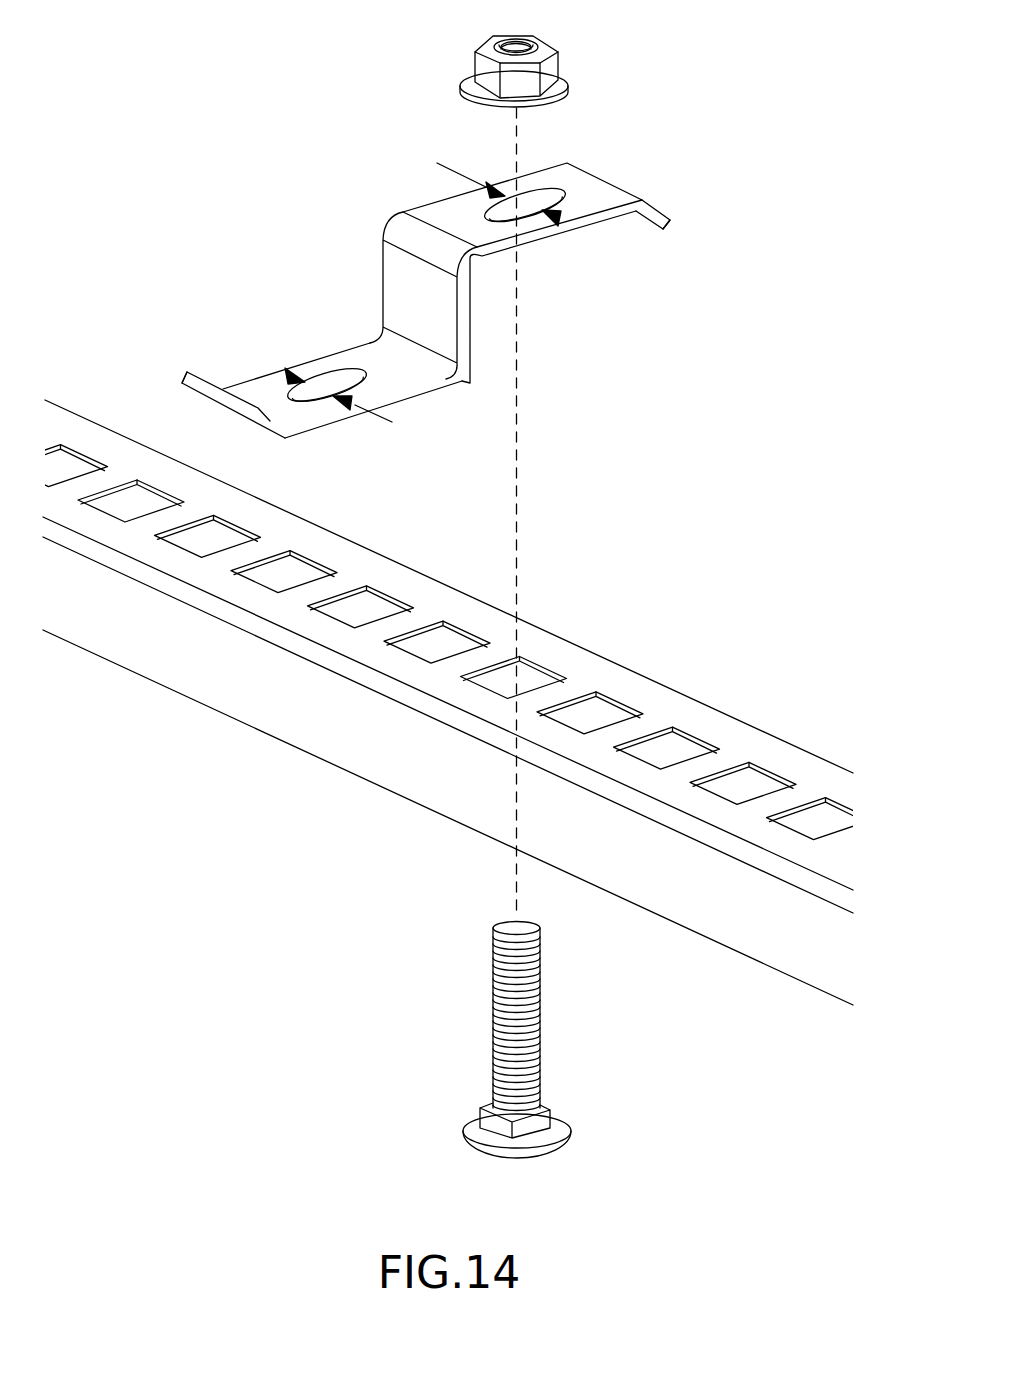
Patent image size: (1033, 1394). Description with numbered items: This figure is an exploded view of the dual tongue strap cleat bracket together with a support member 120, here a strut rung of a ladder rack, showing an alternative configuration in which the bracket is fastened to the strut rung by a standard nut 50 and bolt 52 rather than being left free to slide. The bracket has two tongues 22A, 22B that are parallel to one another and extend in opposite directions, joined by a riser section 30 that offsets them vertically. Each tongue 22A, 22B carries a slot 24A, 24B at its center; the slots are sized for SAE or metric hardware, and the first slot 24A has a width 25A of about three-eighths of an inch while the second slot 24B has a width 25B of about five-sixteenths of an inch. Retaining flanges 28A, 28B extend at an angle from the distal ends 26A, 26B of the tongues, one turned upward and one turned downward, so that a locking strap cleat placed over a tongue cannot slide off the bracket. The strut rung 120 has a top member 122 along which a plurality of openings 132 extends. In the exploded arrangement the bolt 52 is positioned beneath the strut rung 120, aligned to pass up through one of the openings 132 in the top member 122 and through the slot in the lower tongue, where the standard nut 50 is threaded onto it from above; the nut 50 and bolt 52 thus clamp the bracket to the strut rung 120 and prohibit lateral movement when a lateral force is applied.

The standard nut 50 is at (483, 70).
The bolt 52 is at (493, 965).
The riser section 30 is at (398, 277).
The tongue 22A is at (447, 213).
The tongue 22B is at (355, 360).
The slot 24A is at (510, 213).
The slot 24B is at (372, 382).
The width 25A is at (560, 220).
The width 25B is at (287, 374).
The distal end 26A is at (610, 180).
The distal end 26B is at (285, 440).
The retaining flange 28A is at (653, 212).
The retaining flange 28B is at (197, 398).
The support member 120 is at (437, 702).
The top member 122 is at (633, 692).
The openings 132 is at (374, 607).